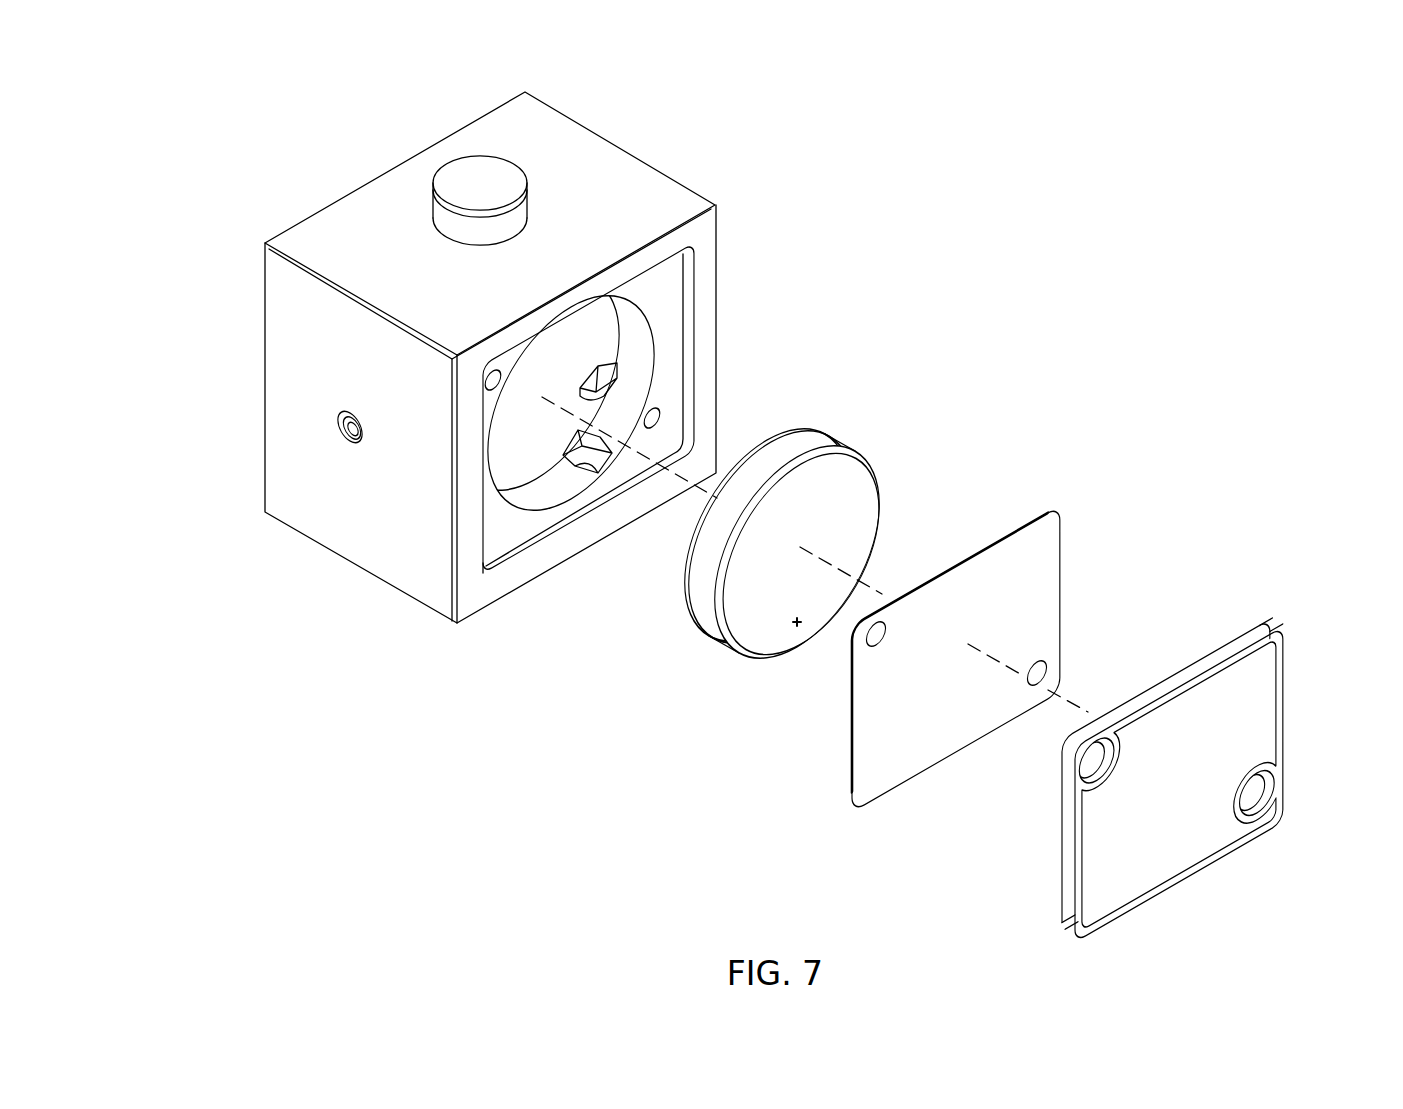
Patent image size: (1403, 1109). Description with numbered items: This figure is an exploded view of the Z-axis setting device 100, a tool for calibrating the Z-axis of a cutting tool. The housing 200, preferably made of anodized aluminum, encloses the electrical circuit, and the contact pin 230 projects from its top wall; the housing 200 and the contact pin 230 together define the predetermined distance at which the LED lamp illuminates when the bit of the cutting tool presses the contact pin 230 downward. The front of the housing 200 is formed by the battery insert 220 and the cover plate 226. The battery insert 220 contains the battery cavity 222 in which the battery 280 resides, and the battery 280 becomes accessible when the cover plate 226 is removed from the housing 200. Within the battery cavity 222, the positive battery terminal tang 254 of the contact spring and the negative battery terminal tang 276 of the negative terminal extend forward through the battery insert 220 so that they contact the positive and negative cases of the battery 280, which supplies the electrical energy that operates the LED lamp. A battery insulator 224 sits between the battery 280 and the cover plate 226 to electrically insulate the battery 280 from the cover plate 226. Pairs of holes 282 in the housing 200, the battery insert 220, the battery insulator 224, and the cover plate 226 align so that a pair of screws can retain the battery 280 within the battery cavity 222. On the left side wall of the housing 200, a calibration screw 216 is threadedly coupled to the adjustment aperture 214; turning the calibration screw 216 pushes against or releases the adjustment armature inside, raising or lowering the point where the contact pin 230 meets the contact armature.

The Z-axis setting device 100 is at (231, 236).
The housing 200 is at (670, 175).
The contact pin 230 is at (472, 173).
The negative battery terminal tang 276 is at (598, 380).
The battery insert 220 is at (662, 305).
The battery cavity 222 is at (657, 370).
The positive battery terminal tang 254 is at (598, 463).
The calibration screw 216 is at (337, 425).
The adjustment aperture 214 is at (350, 445).
The battery 280 is at (877, 482).
The pairs of holes 282 is at (1027, 685).
The battery insulator 224 is at (1062, 505).
The cover plate 226 is at (1282, 635).